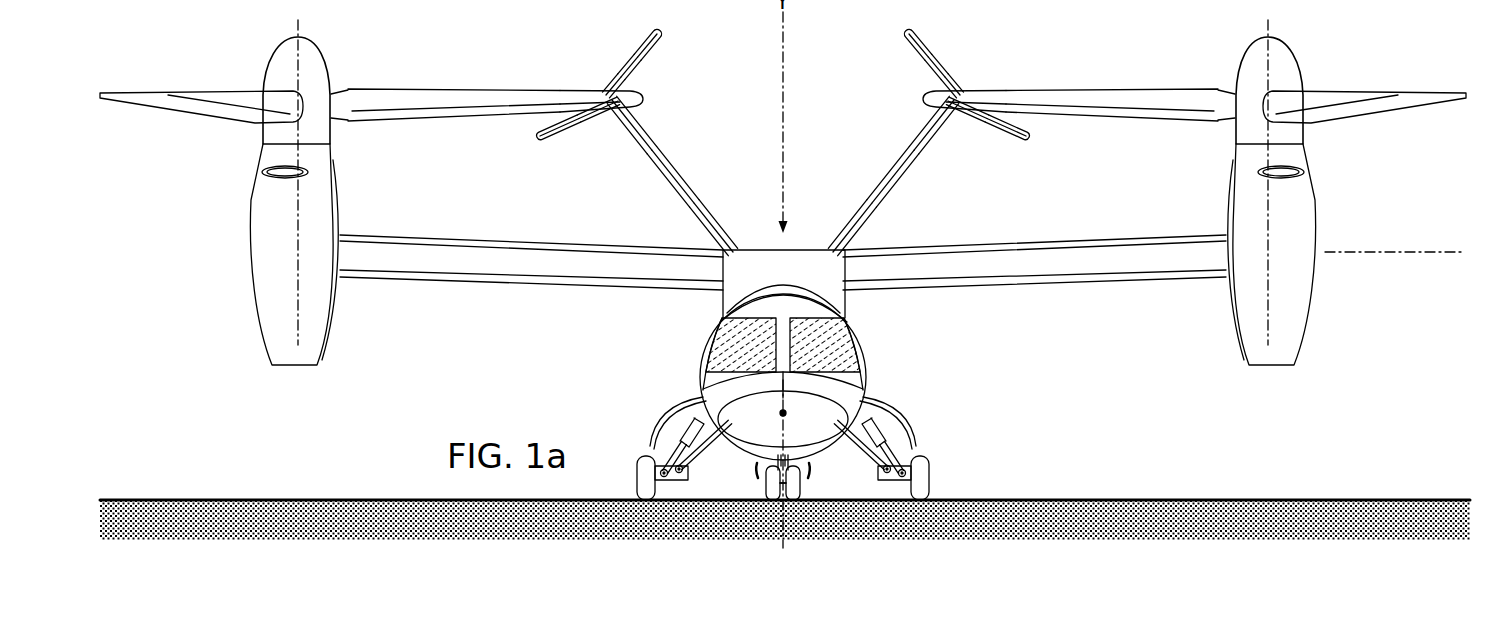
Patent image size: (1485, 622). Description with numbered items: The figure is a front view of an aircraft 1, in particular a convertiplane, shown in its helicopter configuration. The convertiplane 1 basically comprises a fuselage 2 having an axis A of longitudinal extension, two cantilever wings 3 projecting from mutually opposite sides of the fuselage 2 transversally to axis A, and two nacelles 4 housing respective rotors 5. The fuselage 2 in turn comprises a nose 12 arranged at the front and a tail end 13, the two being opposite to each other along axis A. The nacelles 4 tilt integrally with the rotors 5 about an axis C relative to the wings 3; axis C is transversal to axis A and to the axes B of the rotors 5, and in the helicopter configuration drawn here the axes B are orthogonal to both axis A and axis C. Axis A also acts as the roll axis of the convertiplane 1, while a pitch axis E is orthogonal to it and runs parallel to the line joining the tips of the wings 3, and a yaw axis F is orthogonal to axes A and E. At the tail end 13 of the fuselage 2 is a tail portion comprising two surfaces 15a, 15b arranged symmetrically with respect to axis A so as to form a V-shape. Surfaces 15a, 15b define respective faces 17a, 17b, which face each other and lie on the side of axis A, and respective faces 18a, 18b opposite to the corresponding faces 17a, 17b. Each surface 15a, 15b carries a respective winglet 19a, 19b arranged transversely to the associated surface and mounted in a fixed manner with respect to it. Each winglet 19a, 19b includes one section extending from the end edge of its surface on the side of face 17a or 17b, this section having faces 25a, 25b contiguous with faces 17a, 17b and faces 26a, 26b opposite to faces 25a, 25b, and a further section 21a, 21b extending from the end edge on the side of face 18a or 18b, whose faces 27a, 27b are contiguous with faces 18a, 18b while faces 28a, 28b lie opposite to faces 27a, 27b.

The aircraft 1 is at (1012, 384).
The fuselage 2 is at (692, 372).
The cantilever wings 3 is at (491, 280).
The nacelles 4 is at (275, 278).
The rotors 5 is at (288, 72).
The nose 12 is at (810, 420).
The tail end 13 is at (811, 208).
The surface 15a is at (641, 155).
The surface 15b is at (896, 197).
The face 17a is at (692, 172).
The face 17b is at (876, 172).
The face 18a is at (696, 225).
The face 18b is at (872, 230).
The winglet 19a is at (660, 52).
The winglet 19b is at (982, 76).
The section 21a is at (584, 132).
The section 21b is at (1010, 150).
The face 25a is at (638, 78).
The face 25b is at (922, 69).
The face 26a is at (618, 58).
The face 26b is at (956, 60).
The face 27a is at (556, 138).
The face 27b is at (982, 126).
The face 28a is at (541, 126).
The face 28b is at (1030, 124).
The axis A is at (783, 413).
The axes B is at (298, 283).
The axis C is at (1428, 309).
The pitch axis E is at (1428, 252).
The yaw axis F is at (783, 545).